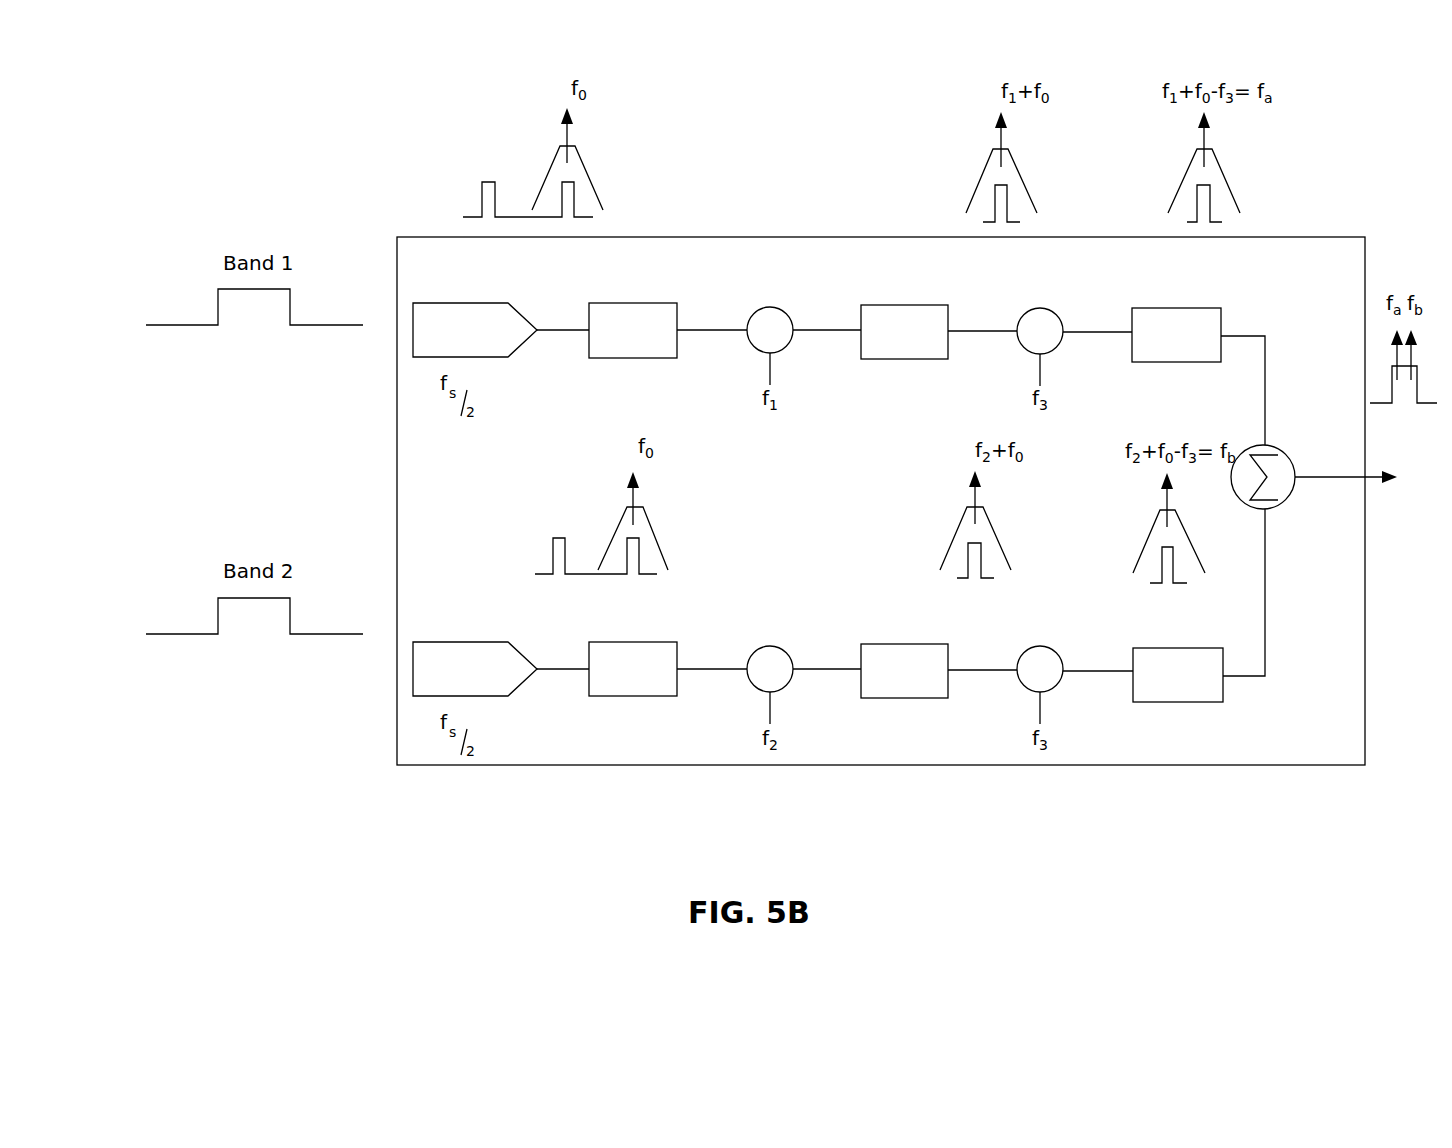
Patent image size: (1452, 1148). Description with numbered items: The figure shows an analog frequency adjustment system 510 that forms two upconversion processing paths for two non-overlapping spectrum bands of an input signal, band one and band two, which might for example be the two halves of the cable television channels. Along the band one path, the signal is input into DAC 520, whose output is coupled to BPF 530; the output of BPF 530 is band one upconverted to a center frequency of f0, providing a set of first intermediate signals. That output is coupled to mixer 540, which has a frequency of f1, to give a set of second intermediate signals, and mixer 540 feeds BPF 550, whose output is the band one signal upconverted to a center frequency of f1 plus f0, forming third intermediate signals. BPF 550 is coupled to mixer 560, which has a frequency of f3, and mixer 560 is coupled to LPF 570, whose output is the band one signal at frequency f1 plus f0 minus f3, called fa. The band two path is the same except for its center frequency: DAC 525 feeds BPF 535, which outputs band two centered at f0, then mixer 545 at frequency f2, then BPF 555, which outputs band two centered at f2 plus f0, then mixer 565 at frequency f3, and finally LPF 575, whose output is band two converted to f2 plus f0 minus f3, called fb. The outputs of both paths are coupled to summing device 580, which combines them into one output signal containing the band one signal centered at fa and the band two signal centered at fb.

The analog frequency adjustment system 510 is at (881, 532).
The DAC 520 is at (478, 301).
The DAC 525 is at (478, 640).
The band pass filter 530 is at (653, 302).
The band pass filter 535 is at (653, 640).
The mixer 540 is at (803, 300).
The mixer 545 is at (803, 639).
The band pass filter 550 is at (926, 303).
The band pass filter 555 is at (926, 642).
The mixer 560 is at (1073, 301).
The mixer 565 is at (1073, 639).
The low pass filter 570 is at (1196, 304).
The low pass filter 575 is at (1196, 643).
The summing device 580 is at (1297, 447).